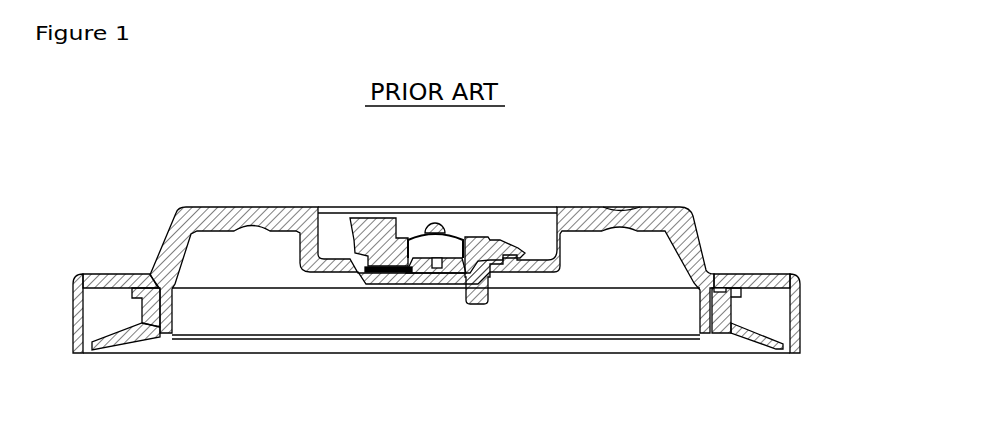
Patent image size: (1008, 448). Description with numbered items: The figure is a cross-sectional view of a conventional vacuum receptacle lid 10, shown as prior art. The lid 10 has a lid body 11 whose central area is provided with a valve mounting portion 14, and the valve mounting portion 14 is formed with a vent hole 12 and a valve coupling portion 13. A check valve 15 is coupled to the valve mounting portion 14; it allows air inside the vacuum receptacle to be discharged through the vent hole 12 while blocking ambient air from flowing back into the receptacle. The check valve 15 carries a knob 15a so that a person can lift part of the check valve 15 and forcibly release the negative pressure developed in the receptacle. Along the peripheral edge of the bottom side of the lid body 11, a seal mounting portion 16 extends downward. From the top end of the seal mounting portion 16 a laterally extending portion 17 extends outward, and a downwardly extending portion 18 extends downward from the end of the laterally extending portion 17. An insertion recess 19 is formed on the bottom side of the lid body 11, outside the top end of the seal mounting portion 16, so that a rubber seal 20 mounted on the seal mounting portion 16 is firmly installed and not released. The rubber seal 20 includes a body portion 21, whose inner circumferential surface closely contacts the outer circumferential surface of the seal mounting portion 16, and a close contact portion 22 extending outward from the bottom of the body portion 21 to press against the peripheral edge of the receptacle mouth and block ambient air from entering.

The vacuum receptacle lid 10 is at (750, 166).
The lid body 11 is at (630, 207).
The vent hole 12 is at (437, 266).
The valve coupling portion 13 is at (500, 276).
The valve mounting portion 14 is at (387, 271).
The check valve 15 is at (440, 224).
The knob 15a is at (372, 230).
The seal mounting portion 16 is at (698, 312).
The laterally extending portion 17 is at (758, 273).
The downwardly extending portion 18 is at (801, 330).
The insertion recess 19 is at (722, 292).
The rubber seal 20 is at (150, 348).
The body portion 21 is at (148, 275).
The close contact portion 22 is at (127, 350).